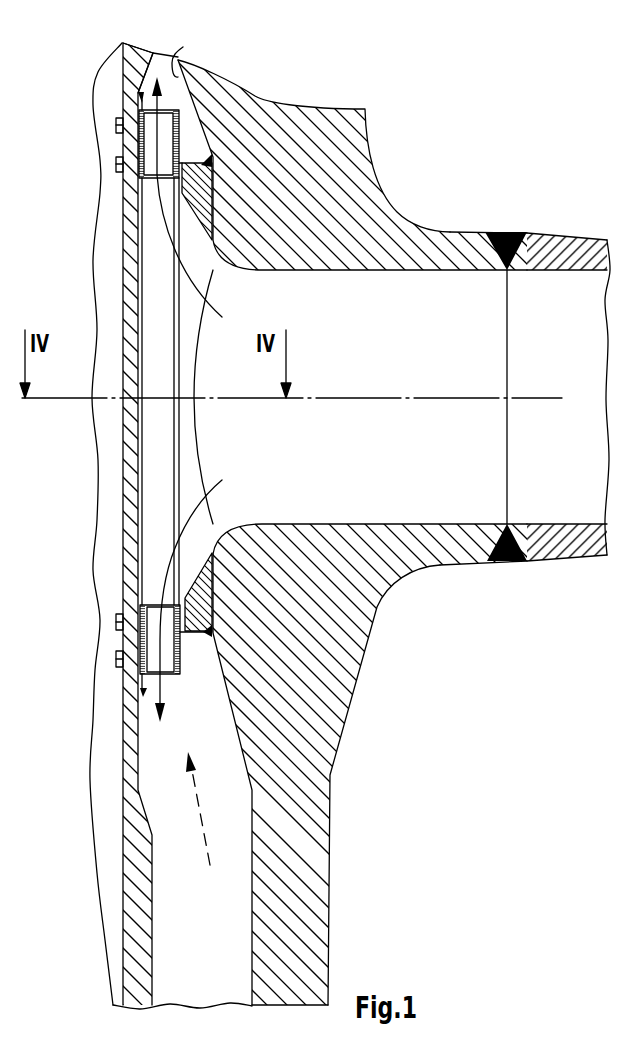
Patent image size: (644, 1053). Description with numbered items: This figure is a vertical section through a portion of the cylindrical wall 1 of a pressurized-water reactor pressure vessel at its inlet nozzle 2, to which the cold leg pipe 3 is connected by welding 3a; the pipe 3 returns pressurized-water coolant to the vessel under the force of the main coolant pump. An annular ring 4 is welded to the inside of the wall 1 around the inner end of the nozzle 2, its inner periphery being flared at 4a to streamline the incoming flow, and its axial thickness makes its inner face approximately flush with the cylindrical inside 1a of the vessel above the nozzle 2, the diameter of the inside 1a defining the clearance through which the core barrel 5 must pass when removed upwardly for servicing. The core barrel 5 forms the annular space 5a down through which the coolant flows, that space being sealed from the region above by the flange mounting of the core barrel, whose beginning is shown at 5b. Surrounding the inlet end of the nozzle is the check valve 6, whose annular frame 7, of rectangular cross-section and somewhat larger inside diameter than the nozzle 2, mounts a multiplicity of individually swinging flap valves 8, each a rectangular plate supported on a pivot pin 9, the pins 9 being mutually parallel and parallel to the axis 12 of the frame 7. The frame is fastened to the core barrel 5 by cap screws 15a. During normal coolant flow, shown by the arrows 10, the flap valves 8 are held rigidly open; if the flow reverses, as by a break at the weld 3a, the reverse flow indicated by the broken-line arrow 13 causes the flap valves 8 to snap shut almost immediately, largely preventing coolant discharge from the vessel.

The cylindrical wall 1 is at (318, 880).
The cylindrical inside 1a is at (192, 40).
The inlet nozzle 2 is at (455, 243).
The cold leg pipe 3 is at (558, 250).
The welding 3a is at (510, 562).
The annular ring 4 is at (200, 204).
The flared inner periphery 4a is at (206, 574).
The core barrel 5 is at (139, 763).
The annular space 5a is at (182, 955).
The flange 5b is at (139, 44).
The check valve 6 is at (140, 148).
The annular frame 7 is at (183, 668).
The flap valve 8 is at (150, 167).
The pivot pin 9 is at (180, 160).
The arrows 10 is at (165, 217).
The axis 12 is at (440, 396).
The flow direction 13 is at (203, 820).
The cap screws 15a is at (117, 124).